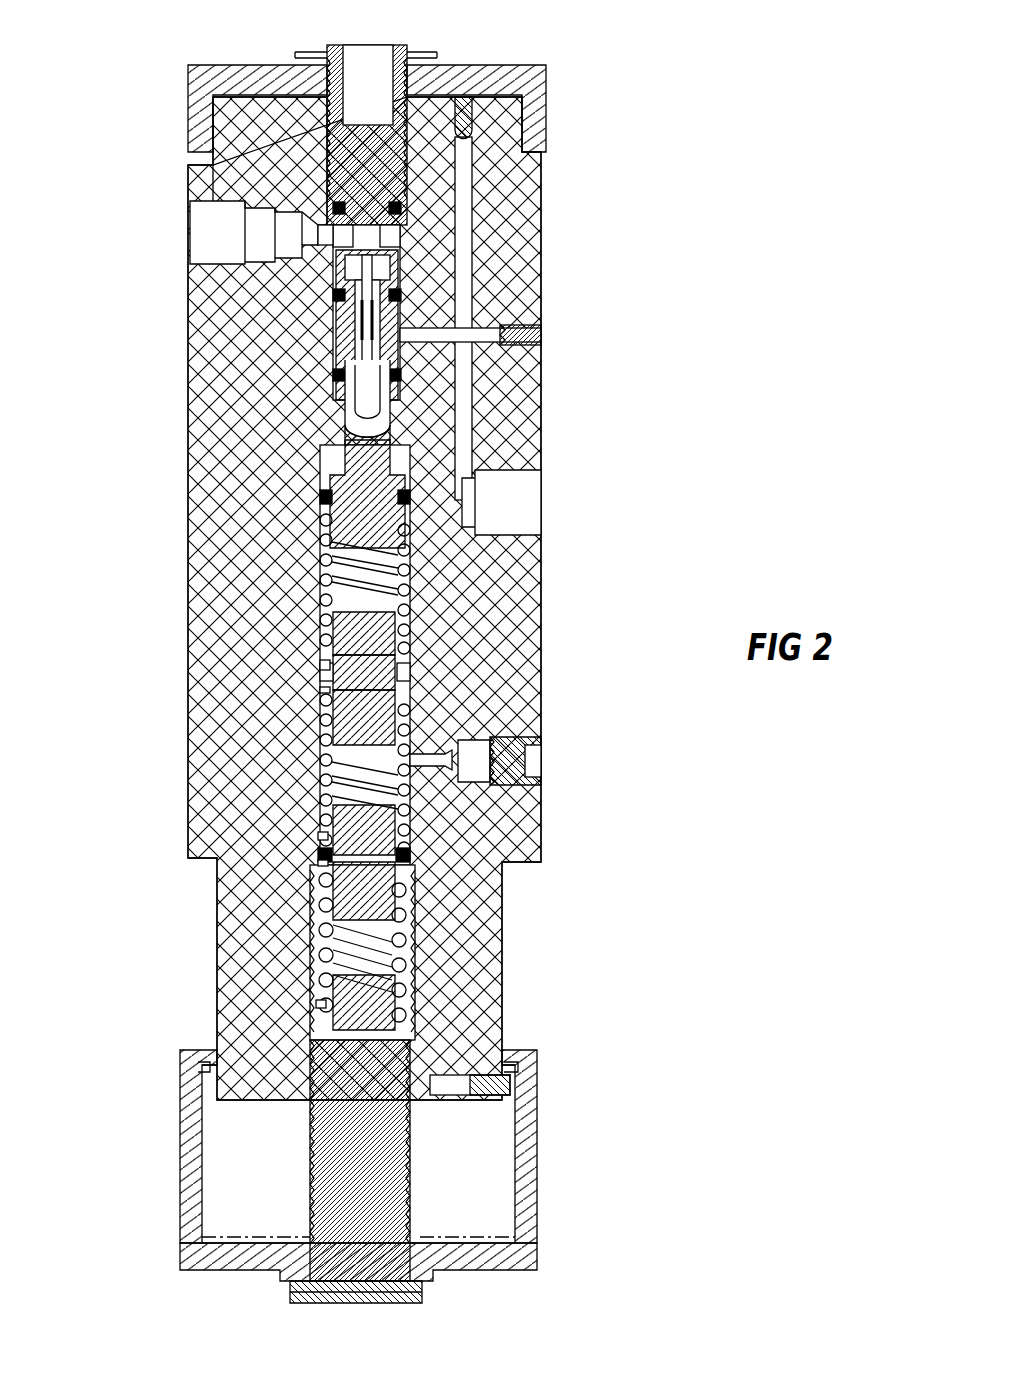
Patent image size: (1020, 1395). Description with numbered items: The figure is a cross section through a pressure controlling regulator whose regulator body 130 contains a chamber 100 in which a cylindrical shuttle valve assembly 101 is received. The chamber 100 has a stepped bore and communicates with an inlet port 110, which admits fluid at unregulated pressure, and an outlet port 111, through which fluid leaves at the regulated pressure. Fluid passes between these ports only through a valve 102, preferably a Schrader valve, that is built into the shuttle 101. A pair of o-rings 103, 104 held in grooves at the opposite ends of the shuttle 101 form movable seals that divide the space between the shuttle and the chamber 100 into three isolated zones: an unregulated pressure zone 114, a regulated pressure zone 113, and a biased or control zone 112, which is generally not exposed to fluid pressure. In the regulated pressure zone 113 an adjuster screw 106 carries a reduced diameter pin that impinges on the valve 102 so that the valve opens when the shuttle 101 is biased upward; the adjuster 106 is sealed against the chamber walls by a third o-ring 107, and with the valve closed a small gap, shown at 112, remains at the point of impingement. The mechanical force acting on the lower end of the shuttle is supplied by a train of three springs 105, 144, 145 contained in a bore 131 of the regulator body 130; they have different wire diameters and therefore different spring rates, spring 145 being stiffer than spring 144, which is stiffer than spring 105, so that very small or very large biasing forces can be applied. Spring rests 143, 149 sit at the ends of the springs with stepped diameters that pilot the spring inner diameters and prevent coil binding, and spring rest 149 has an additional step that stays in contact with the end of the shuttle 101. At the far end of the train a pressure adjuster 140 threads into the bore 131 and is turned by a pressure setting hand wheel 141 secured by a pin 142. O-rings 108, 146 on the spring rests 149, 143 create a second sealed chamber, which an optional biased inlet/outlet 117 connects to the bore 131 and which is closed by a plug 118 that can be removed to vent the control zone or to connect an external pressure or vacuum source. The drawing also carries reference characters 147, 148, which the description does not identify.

The chamber 100 is at (405, 240).
The shuttle valve assembly 101 is at (405, 292).
The valve 102 is at (323, 243).
The o-ring 103 is at (330, 296).
The o-ring 104 is at (330, 375).
The spring 105 is at (412, 580).
The adjuster screw 106 is at (405, 43).
The third o-ring 107 is at (470, 112).
The o-ring 108 is at (318, 497).
The inlet port 110 is at (530, 500).
The outlet port 111 is at (215, 234).
The biased or control zone 112 is at (398, 398).
The regulated pressure zone 113 is at (405, 198).
The unregulated pressure zone 114 is at (545, 335).
The biased inlet/outlet 117 is at (425, 762).
The plug 118 is at (540, 752).
The regulator body 130 is at (186, 450).
The bore 131 is at (318, 537).
The pressure adjuster 140 is at (412, 1182).
The pressure setting hand wheel 141 is at (540, 1250).
The pin 142 is at (425, 1292).
The spring rest 143 is at (314, 1012).
The spring 144 is at (413, 707).
The spring 145 is at (413, 968).
The o-ring 146 is at (408, 856).
The divider 147 is at (405, 672).
The spring 148 is at (412, 810).
The spring rest 149 is at (340, 462).